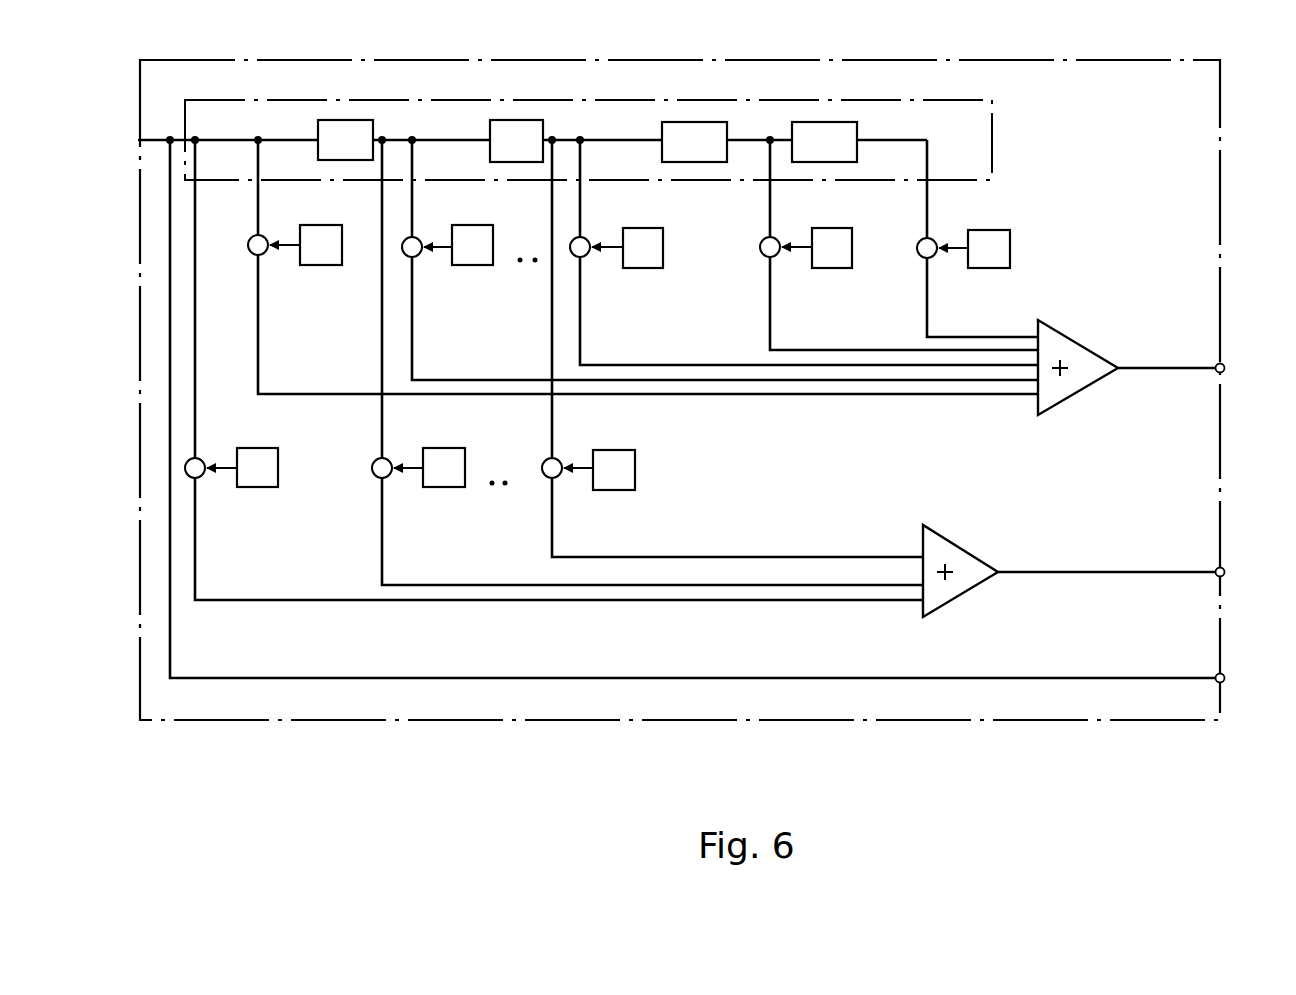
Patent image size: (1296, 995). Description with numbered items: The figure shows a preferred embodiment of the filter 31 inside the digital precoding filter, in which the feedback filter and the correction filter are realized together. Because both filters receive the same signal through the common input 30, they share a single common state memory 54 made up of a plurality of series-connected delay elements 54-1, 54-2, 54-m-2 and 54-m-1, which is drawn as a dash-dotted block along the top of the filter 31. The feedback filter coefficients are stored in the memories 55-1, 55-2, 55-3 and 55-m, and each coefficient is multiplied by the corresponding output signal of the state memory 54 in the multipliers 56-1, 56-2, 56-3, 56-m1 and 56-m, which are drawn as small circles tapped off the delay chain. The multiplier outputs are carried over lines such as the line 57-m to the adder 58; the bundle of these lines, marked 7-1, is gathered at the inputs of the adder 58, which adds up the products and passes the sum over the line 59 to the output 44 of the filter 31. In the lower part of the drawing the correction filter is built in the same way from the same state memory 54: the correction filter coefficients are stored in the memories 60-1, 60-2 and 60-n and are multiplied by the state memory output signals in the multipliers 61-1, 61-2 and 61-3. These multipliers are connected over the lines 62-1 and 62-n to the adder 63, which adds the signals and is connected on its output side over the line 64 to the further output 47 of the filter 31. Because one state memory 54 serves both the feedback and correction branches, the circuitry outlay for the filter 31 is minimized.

The input 30 is at (138, 140).
The filter 31 is at (680, 390).
The common state memory 54 is at (588, 140).
The delay element 54-1 is at (345, 140).
The delay element 54-2 is at (516, 141).
The delay element 54-m-2 is at (694, 142).
The delay element 54-m-1 is at (824, 142).
The multiplier 56-1 is at (253, 256).
The multiplier 56-2 is at (418, 238).
The multiplier 56-3 is at (587, 238).
The multiplier 56-m1 is at (777, 238).
The multiplier 56-m is at (935, 239).
The memory 55-1 is at (320, 265).
The memory 55-2 is at (470, 265).
The memory 55-3 is at (640, 268).
The memory 55-m is at (1010, 240).
The line 57-m is at (1002, 337).
The group of multiplier output lines 7-1 is at (1010, 407).
The adder 58 is at (1080, 340).
The line 59 is at (1168, 370).
The output 44 is at (1224, 364).
The multiplier 61-1 is at (202, 459).
The multiplier 61-2 is at (389, 459).
The multiplier 61-3 is at (559, 459).
The memory 60-1 is at (258, 487).
The memory 60-2 is at (445, 487).
The memory 60-n is at (613, 490).
The line 62-n is at (800, 530).
The line 62-1 is at (773, 600).
The adder 63 is at (960, 545).
The line 64 is at (1100, 573).
The further output 47 is at (1224, 568).